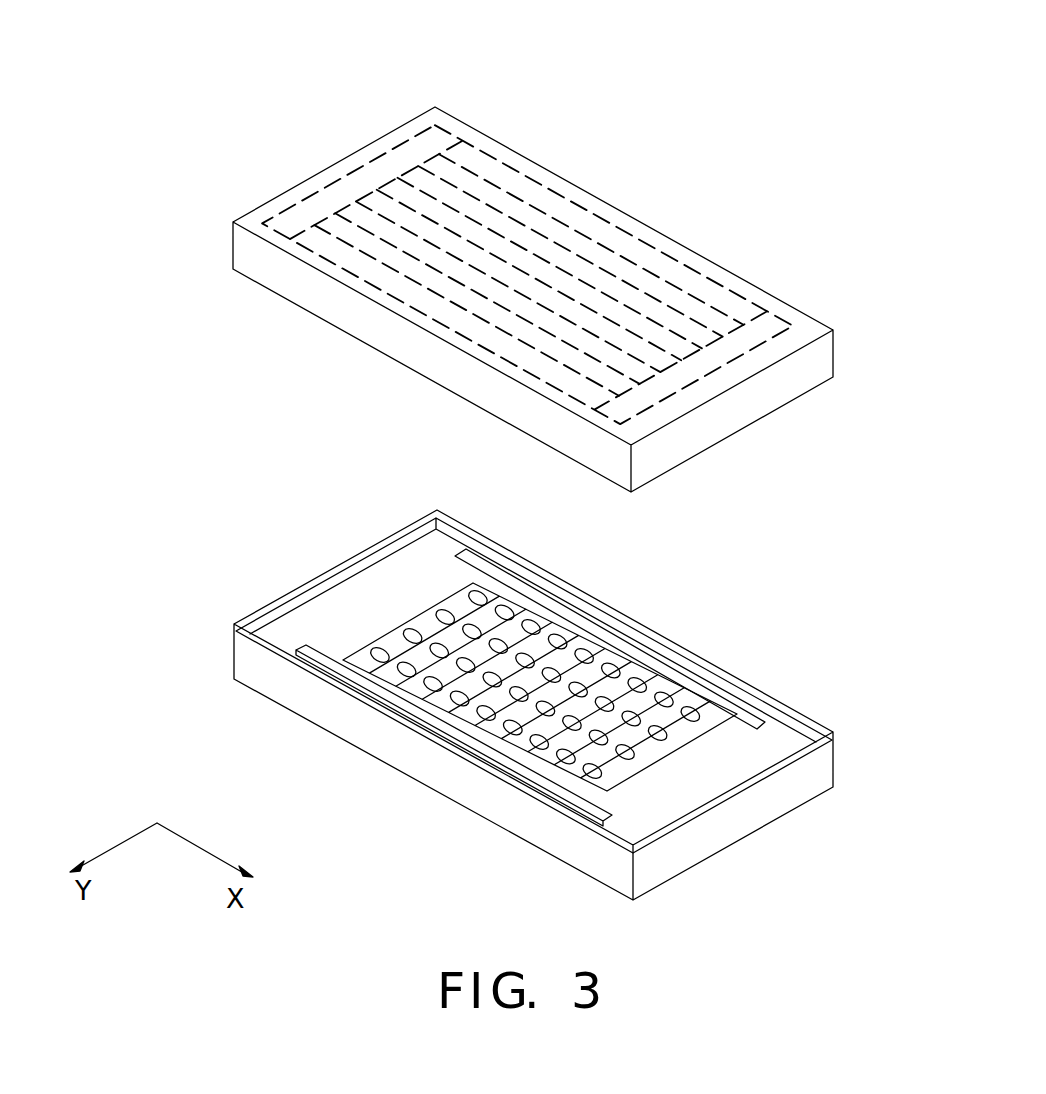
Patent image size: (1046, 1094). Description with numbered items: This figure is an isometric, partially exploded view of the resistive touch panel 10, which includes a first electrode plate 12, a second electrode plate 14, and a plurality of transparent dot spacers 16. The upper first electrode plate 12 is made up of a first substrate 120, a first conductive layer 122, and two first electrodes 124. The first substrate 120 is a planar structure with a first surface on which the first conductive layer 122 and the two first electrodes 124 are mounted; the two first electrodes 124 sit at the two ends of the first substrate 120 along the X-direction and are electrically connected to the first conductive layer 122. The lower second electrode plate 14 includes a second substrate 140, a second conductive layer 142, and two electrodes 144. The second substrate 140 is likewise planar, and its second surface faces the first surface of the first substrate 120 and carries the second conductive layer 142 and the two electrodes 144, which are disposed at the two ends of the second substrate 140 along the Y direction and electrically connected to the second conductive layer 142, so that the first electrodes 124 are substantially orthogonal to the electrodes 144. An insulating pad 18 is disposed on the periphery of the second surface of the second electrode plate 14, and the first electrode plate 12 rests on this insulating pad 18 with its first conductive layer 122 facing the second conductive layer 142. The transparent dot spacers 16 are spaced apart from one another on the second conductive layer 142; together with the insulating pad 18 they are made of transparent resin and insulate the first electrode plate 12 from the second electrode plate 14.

The touch panel 10 is at (540, 45).
The first electrode plate 12 is at (584, 294).
The first substrate 120 is at (815, 354).
The first conductive layer 122 is at (543, 227).
The first electrodes 124 is at (365, 178).
The second electrode plate 14 is at (533, 717).
The second substrate 140 is at (495, 805).
The second conductive layer 142 is at (412, 620).
The second electrodes 144 is at (587, 625).
The transparent dot spacers 16 is at (690, 712).
The insulating pad 18 is at (407, 737).